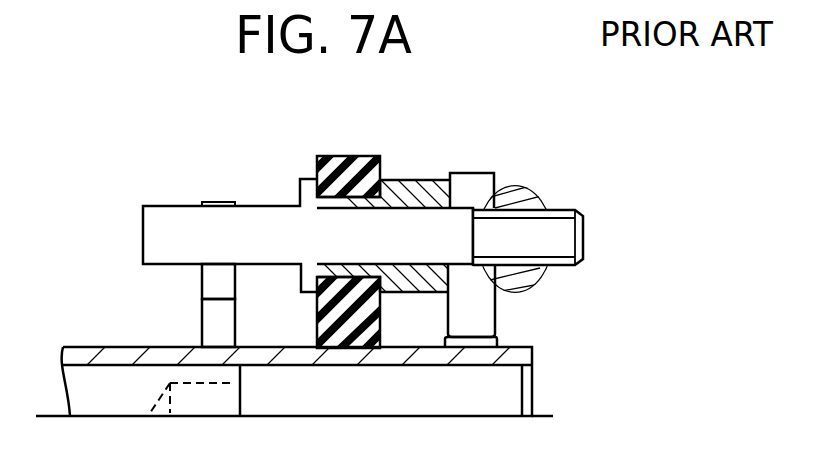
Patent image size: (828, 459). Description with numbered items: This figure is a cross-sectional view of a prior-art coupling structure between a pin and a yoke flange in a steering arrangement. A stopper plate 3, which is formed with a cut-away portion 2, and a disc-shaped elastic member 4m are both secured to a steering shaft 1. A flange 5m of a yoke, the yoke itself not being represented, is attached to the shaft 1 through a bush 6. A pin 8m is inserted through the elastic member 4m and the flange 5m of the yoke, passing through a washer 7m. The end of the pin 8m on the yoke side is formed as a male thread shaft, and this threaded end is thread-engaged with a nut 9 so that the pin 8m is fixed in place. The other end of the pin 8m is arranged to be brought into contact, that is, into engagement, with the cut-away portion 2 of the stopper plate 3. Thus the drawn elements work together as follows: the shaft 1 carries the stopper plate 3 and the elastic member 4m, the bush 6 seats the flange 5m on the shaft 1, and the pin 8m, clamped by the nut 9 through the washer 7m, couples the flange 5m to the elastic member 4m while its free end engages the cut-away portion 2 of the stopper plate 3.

The steering shaft 1 is at (168, 347).
The cut-away portion 2 is at (218, 283).
The stopper plate 3 is at (210, 308).
The disc-shaped elastic member 4m is at (355, 156).
The flange 5m is at (473, 173).
The bush 6 is at (497, 343).
The washer 7m is at (415, 180).
The pin 8m is at (268, 206).
The nut 9 is at (522, 188).